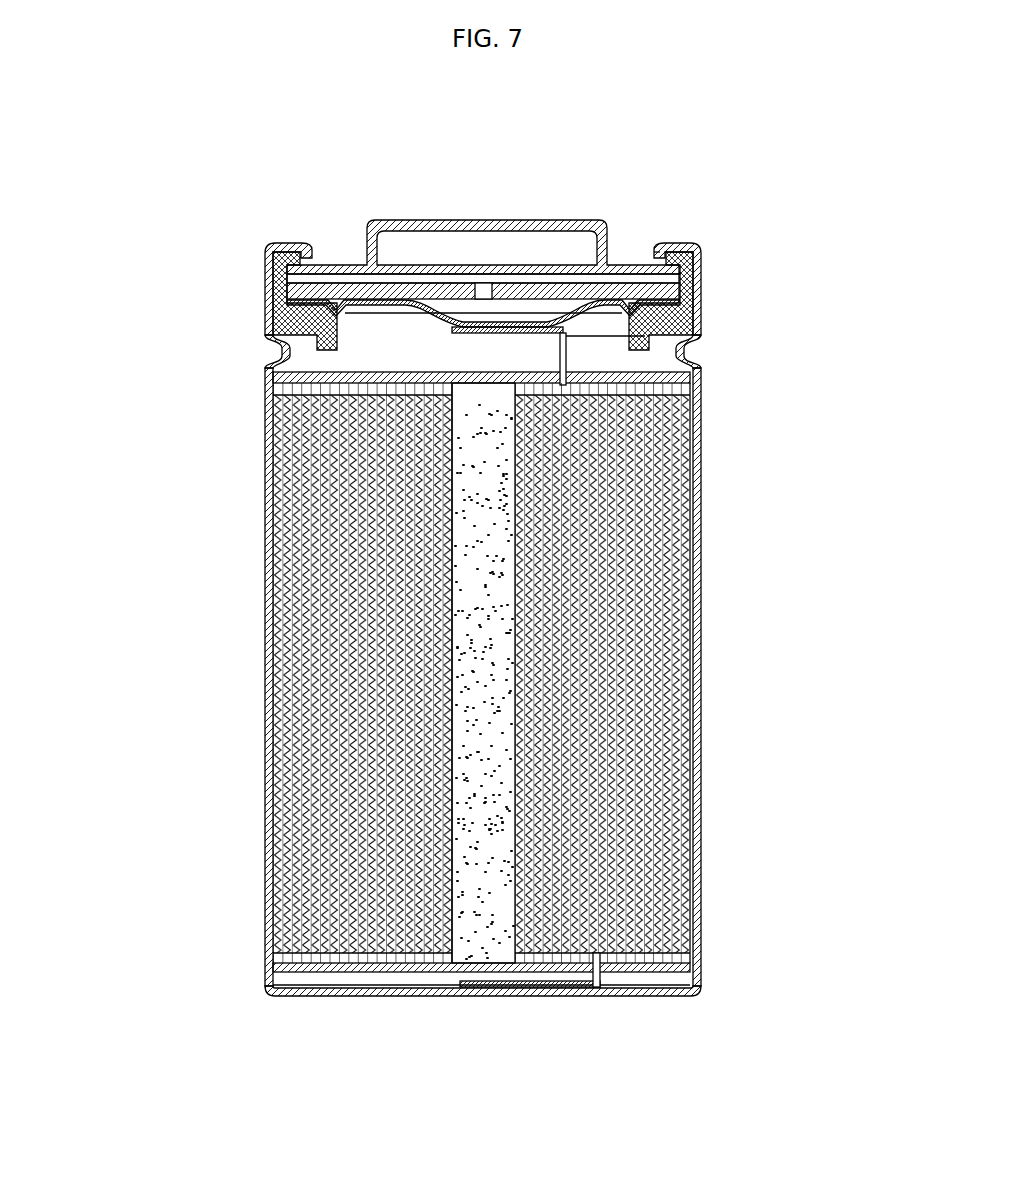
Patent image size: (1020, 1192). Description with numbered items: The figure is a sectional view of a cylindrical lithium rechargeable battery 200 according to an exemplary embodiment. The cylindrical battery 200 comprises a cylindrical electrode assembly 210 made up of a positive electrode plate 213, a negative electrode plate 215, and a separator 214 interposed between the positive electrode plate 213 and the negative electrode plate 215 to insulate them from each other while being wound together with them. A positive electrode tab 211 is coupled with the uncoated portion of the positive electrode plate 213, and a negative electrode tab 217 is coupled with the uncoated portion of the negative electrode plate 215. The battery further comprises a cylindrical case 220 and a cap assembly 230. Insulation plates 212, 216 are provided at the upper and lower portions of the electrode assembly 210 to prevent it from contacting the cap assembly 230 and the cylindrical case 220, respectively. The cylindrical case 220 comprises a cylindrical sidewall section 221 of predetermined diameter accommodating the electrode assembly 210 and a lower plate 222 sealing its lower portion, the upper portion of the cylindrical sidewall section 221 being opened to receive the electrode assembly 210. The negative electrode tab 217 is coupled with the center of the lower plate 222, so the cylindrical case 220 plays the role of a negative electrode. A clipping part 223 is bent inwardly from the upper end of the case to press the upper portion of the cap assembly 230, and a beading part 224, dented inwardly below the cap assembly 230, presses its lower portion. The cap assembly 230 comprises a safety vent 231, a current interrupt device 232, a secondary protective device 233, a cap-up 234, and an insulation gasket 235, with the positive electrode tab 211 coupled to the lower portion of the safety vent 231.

The cylindrical battery 200 is at (736, 200).
The electrode assembly 210 is at (835, 433).
The positive electrode tab 211 is at (680, 350).
The insulation plate 212 is at (665, 373).
The positive electrode plate 213 is at (677, 436).
The separator 214 is at (677, 485).
The negative electrode plate 215 is at (670, 522).
The insulation plate 216 is at (700, 978).
The negative electrode tab 217 is at (588, 998).
The cylindrical case 220 is at (128, 322).
The cylindrical sidewall section 221 is at (265, 424).
The lower plate 222 is at (293, 995).
The clipping part 223 is at (265, 243).
The beading part 224 is at (282, 350).
The cap assembly 230 is at (652, 127).
The safety vent 231 is at (452, 322).
The current interrupt device 232 is at (519, 287).
The secondary protective device 233 is at (570, 280).
The cap-up 234 is at (391, 220).
The insulation gasket 235 is at (695, 240).